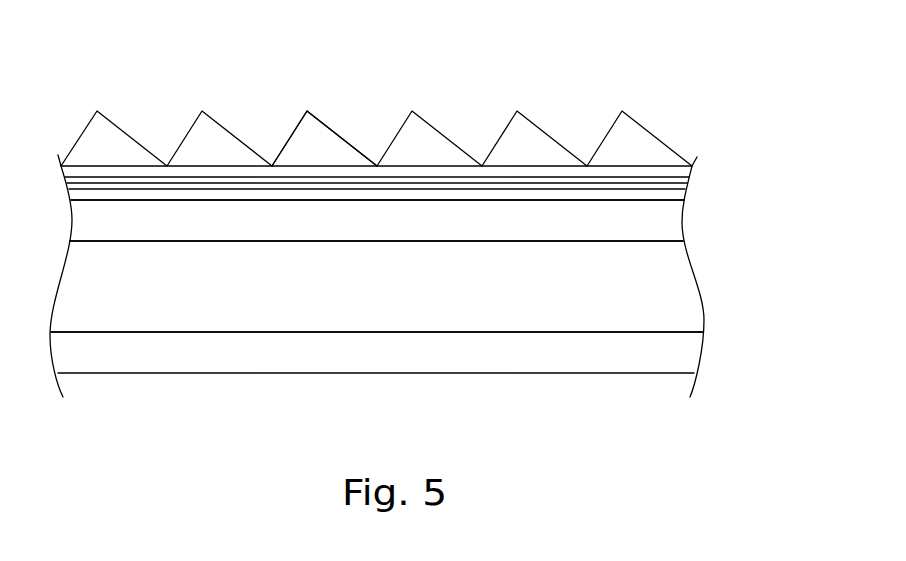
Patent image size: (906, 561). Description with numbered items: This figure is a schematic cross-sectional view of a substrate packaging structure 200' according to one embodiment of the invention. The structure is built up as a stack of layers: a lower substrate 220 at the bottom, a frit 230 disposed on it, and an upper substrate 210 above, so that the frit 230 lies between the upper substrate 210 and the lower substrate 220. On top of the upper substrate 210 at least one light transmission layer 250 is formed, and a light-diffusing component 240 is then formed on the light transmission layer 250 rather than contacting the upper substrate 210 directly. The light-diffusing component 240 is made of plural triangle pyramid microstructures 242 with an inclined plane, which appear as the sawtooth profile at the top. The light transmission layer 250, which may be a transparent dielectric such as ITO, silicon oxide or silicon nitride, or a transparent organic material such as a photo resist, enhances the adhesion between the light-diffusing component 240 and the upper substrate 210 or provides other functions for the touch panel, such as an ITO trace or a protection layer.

The substrate packaging structure 200' is at (410, 209).
The light-diffusing component 240 is at (424, 110).
The triangle pyramid microstructures 242 is at (328, 137).
The light transmission layer 250 is at (700, 167).
The upper substrate 210 is at (673, 222).
The frit 230 is at (690, 282).
The lower substrate 220 is at (690, 350).